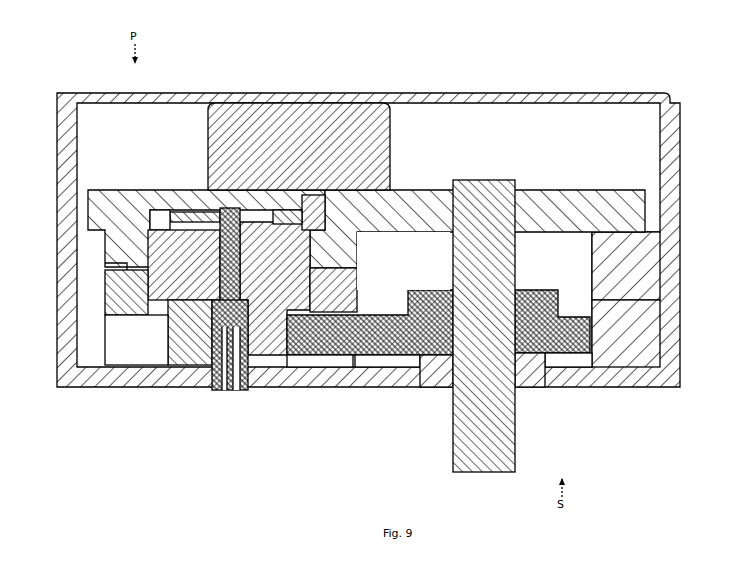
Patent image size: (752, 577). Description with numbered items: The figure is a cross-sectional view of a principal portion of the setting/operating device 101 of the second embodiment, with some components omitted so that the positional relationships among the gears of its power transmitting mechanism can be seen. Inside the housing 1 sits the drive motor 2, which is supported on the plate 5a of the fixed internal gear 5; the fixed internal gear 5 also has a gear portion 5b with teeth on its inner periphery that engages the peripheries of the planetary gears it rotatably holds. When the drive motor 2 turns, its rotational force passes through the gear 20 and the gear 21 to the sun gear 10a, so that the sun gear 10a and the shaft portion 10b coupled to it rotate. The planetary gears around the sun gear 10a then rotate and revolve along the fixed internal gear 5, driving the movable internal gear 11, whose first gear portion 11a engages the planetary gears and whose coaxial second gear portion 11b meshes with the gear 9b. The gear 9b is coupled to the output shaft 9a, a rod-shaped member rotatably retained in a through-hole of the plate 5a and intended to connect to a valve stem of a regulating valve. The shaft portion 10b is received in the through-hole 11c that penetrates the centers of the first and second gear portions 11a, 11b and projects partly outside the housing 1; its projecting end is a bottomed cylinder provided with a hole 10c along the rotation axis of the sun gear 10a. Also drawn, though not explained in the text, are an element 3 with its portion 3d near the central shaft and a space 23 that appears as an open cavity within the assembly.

The housing 1 is at (58, 111).
The setting/operating device 101 is at (675, 91).
The drive motor 2 is at (292, 150).
The gear 20 is at (300, 215).
The gear 21 is at (105, 217).
The cavity 23 is at (403, 262).
The core block 3 is at (252, 297).
The shaft portion 3d is at (232, 208).
The fixed internal gear 5 is at (500, 58).
The plate 5a is at (423, 225).
The gear portion 5b is at (408, 205).
The output shaft 9a is at (517, 258).
The gear 9b is at (517, 335).
The sun gear 10a is at (108, 286).
The shaft portion 10b is at (168, 327).
The hole 10c is at (168, 343).
The movable internal gear 11 is at (338, 440).
The first gear portion 11a is at (332, 388).
The second gear portion 11b is at (274, 388).
The through-hole 11c is at (170, 357).